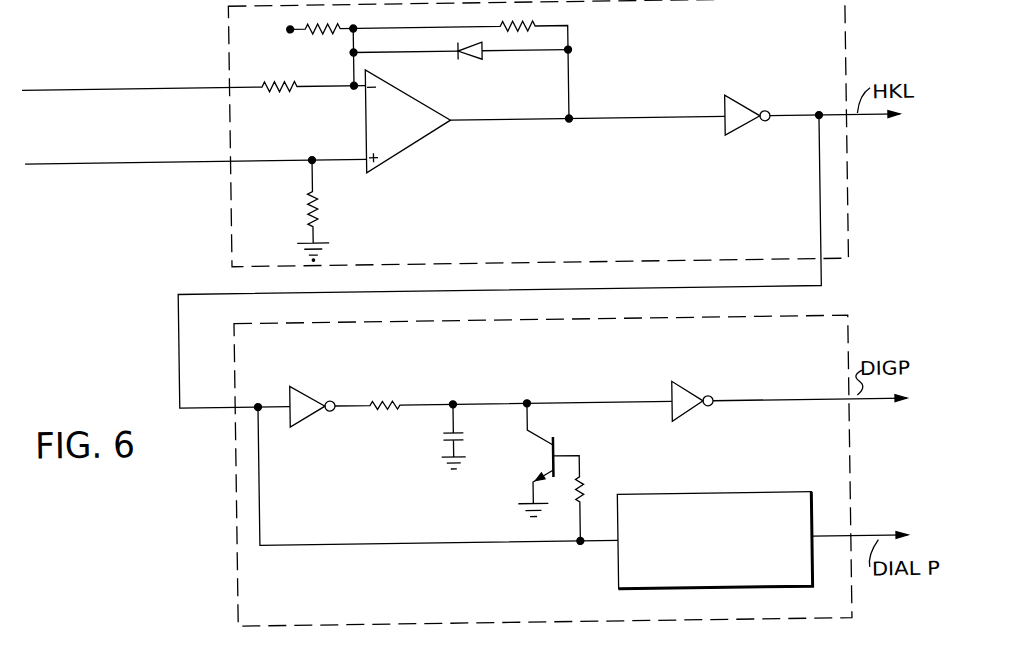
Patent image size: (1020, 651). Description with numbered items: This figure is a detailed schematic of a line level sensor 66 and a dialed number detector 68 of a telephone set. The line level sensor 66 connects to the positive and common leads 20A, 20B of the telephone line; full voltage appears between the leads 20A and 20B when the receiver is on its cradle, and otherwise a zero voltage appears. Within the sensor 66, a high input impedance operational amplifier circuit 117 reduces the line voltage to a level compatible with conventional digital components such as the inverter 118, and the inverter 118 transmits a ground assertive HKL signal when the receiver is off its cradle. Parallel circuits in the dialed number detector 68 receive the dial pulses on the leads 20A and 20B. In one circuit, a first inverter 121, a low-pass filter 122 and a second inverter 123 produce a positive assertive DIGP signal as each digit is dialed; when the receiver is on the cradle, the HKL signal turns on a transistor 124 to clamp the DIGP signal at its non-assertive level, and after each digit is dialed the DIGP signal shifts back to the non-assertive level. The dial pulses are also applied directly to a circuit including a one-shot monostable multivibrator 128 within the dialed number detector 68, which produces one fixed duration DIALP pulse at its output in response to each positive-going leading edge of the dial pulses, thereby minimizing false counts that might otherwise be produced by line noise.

The positive lead 20A is at (110, 83).
The common lead 20B is at (97, 158).
The line level sensor 66 is at (242, 257).
The high input impedance operational amplifier circuit 117 is at (437, 132).
The inverter 118 is at (740, 113).
The first inverter 121 is at (301, 400).
The low-pass filter 122 is at (438, 425).
The second inverter 123 is at (682, 395).
The transistor 124 is at (543, 455).
The monostable multivibrator 128 is at (614, 577).
The dialed number detector 68 is at (248, 567).